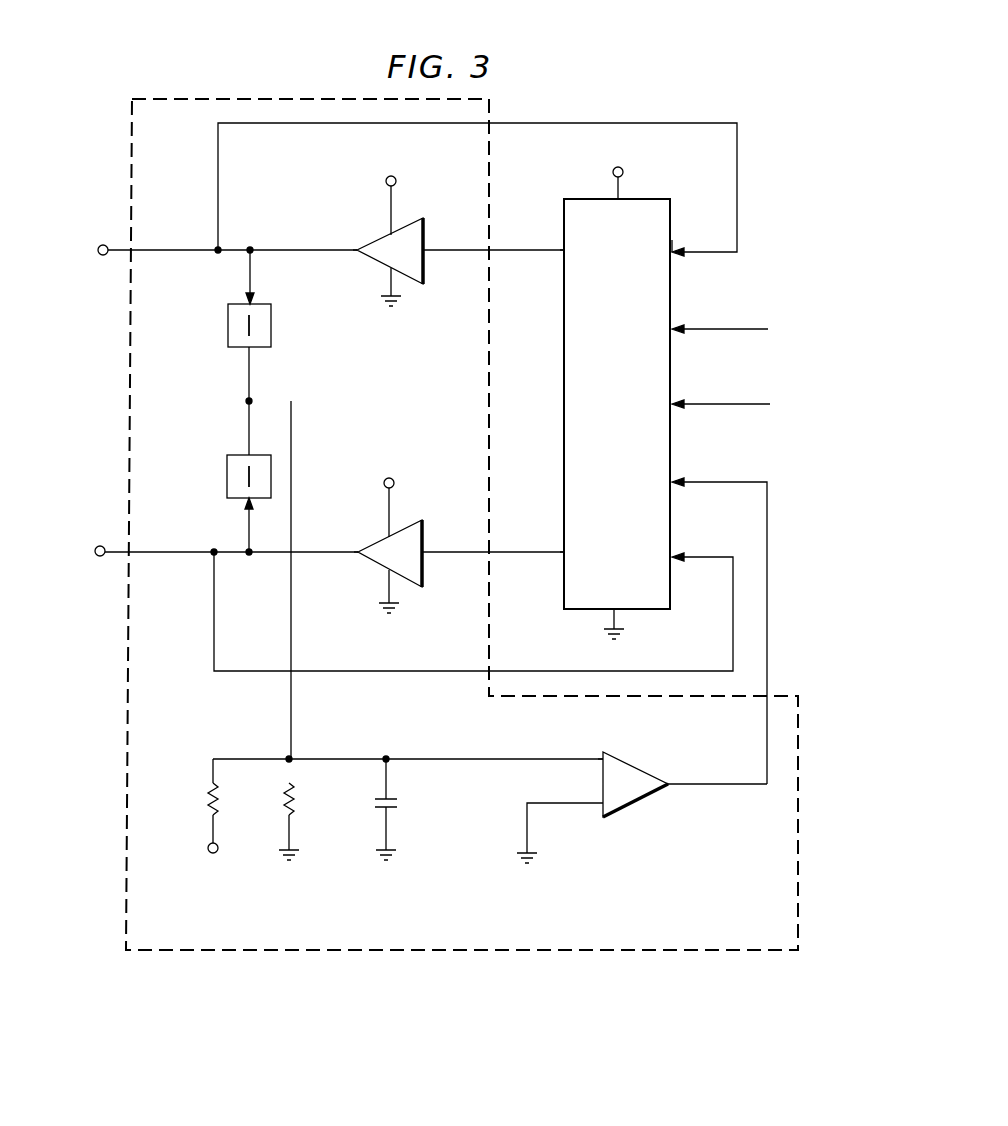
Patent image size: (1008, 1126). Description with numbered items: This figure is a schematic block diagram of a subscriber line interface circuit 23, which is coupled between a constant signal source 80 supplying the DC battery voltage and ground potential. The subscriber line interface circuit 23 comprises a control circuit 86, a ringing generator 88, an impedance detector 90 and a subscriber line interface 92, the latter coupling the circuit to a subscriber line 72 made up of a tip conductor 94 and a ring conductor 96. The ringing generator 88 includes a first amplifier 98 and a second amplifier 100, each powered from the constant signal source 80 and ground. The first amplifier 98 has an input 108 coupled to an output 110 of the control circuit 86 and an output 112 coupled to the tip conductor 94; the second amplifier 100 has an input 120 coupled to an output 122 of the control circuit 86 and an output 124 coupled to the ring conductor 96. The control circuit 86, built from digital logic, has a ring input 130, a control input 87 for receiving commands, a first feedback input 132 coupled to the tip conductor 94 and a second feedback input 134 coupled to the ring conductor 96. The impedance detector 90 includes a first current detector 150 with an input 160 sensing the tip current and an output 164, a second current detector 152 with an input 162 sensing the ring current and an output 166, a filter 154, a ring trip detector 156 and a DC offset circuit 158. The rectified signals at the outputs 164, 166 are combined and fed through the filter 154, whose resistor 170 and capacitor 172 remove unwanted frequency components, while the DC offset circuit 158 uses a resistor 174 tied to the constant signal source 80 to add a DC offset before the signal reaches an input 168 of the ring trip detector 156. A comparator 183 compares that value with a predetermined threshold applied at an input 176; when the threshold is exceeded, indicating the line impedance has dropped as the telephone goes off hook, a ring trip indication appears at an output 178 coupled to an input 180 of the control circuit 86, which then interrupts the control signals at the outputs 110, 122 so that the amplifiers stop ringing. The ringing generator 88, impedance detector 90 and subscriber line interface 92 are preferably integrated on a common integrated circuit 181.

The subscriber line interface circuit 23 is at (807, 165).
The subscriber line 72 is at (62, 357).
The constant signal source 80 is at (397, 181).
The control circuit 86 is at (617, 408).
The control input 87 is at (672, 324).
The ringing generator 88 is at (245, 72).
The impedance detector 90 is at (615, 884).
The subscriber line interface 92 is at (102, 128).
The tip conductor 94 is at (100, 256).
The ring conductor 96 is at (98, 543).
The first amplifier 98 is at (370, 236).
The second amplifier 100 is at (368, 535).
The input of the first amplifier 108 is at (423, 255).
The output of the control circuit 110 is at (562, 255).
The output of the first amplifier 112 is at (356, 253).
The input of the second amplifier 120 is at (423, 555).
The output of the control circuit 122 is at (562, 552).
The output of the second amplifier 124 is at (356, 555).
The ring input 130 is at (672, 399).
The first feedback input 132 is at (672, 248).
The second feedback input 134 is at (672, 562).
The first current detector 150 is at (228, 324).
The second current detector 152 is at (227, 470).
The filter 154 is at (349, 882).
The ring trip detector 156 is at (703, 875).
The DC offset circuit 158 is at (184, 757).
The input of the first current detector 160 is at (244, 300).
The input of the second current detector 162 is at (242, 501).
The output of the first current detector 164 is at (242, 350).
The output of the second current detector 166 is at (246, 450).
The input of the ring trip detector 168 is at (602, 759).
The resistor 170 is at (292, 800).
The capacitor 172 is at (397, 803).
The resistor 174 is at (208, 801).
The input of the ring trip detector 176 is at (594, 808).
The output of the ring trip detector 178 is at (666, 782).
The input of the control circuit 180 is at (672, 487).
The common integrated circuit 181 is at (476, 189).
The comparator 183 is at (640, 803).